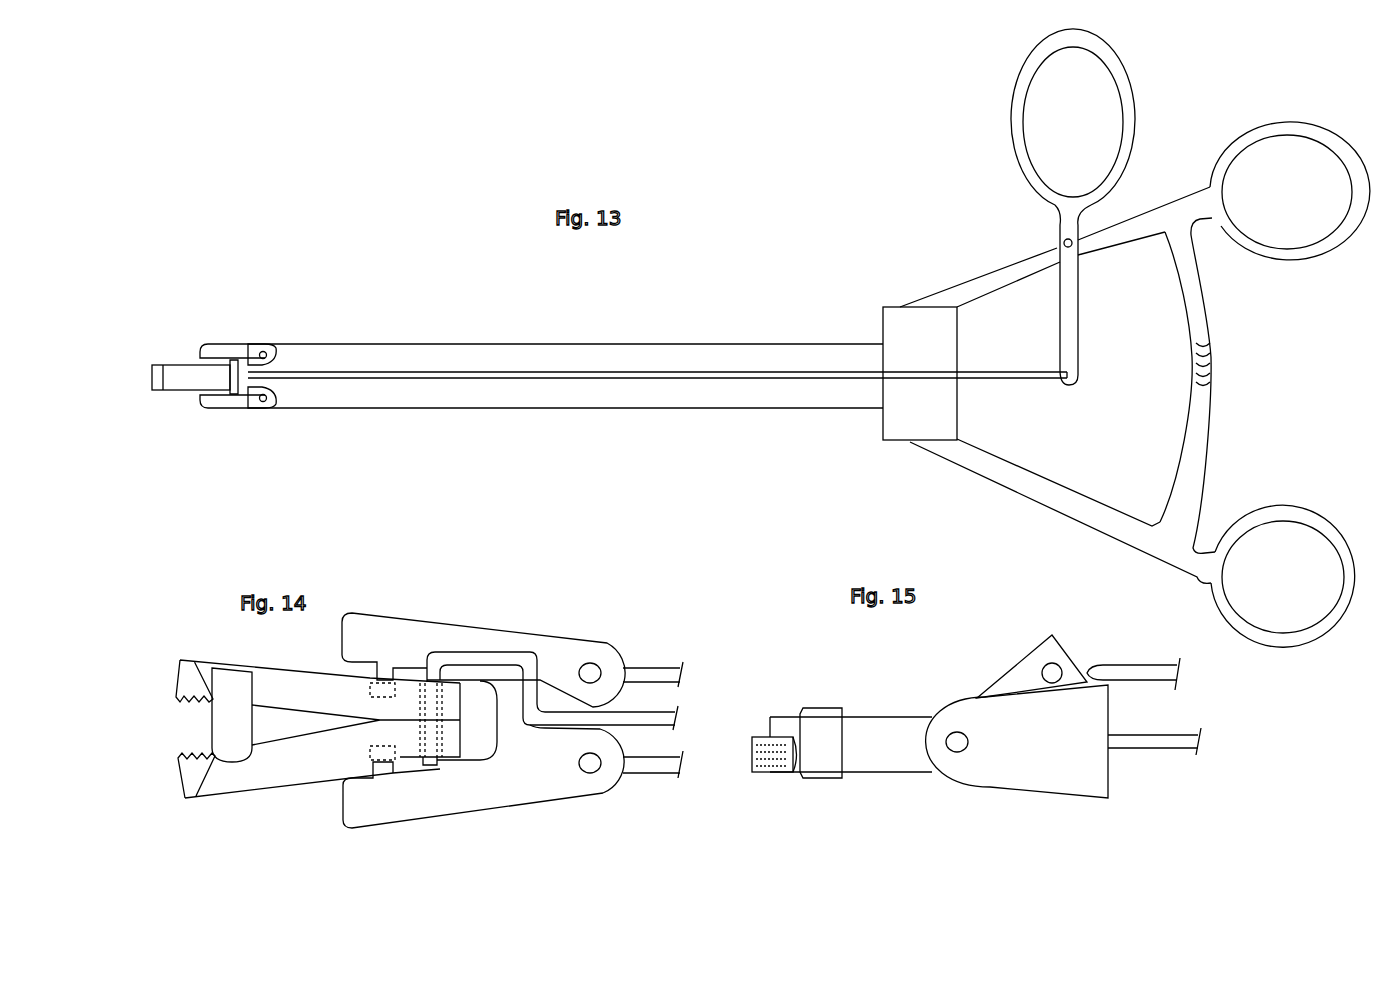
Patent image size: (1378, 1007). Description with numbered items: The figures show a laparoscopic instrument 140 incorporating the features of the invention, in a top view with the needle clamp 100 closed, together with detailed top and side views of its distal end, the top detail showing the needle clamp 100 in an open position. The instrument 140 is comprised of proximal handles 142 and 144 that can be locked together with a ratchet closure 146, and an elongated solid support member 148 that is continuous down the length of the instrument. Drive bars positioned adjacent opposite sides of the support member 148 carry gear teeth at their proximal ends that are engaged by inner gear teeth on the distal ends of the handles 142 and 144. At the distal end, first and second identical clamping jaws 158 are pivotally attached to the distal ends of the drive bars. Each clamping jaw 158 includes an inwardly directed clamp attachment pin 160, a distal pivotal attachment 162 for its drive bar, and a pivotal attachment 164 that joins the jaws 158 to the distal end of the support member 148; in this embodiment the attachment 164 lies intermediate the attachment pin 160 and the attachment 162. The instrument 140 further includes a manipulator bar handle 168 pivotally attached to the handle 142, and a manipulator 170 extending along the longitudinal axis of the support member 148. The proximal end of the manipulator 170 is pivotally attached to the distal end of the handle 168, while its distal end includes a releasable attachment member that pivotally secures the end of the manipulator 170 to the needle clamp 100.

In FIG. 13, the needle clamp 100 is at (165, 355).
In FIG. 14, the needle clamp 100 is at (258, 795).
In FIG. 15, the needle clamp 100 is at (841, 790).
In FIG. 13, the laparoscopic instrument 140 is at (877, 290).
In FIG. 13, the proximal handle 142 is at (1262, 130).
In FIG. 13, the proximal handle 144 is at (1286, 512).
In FIG. 13, the ratchet closure 146 is at (1207, 362).
In FIG. 13, the elongated solid support member 148 is at (600, 350).
In FIG. 13, the clamping jaw 158 is at (256, 349).
In FIG. 14, the clamping jaw 158 is at (476, 790).
In FIG. 14, the clamp attachment pin 160 is at (385, 770).
In FIG. 14, the distal pivotal attachment 162 is at (590, 662).
In FIG. 14, the pivotal attachment 164 is at (565, 798).
In FIG. 13, the manipulator bar handle 168 is at (1015, 115).
In FIG. 13, the manipulator 170 is at (1013, 372).
In FIG. 15, the manipulator 170 is at (1137, 668).